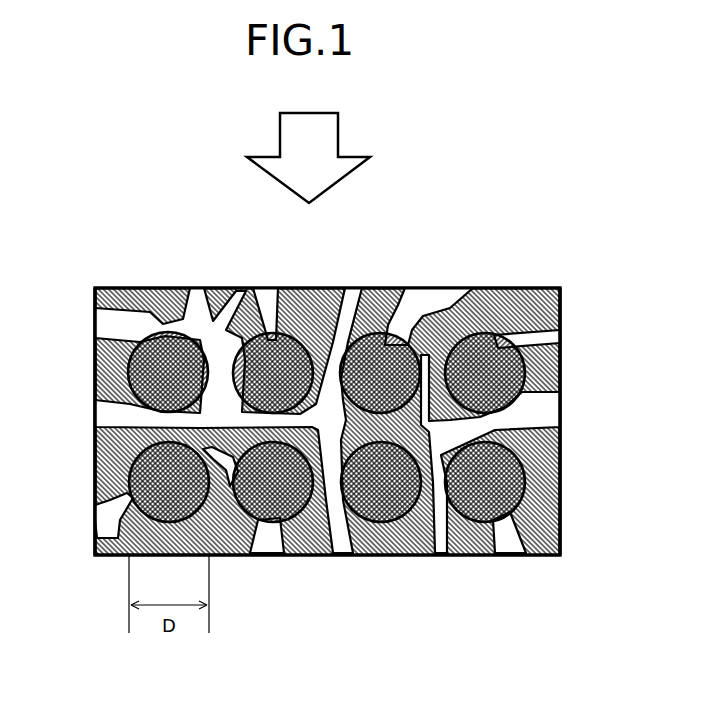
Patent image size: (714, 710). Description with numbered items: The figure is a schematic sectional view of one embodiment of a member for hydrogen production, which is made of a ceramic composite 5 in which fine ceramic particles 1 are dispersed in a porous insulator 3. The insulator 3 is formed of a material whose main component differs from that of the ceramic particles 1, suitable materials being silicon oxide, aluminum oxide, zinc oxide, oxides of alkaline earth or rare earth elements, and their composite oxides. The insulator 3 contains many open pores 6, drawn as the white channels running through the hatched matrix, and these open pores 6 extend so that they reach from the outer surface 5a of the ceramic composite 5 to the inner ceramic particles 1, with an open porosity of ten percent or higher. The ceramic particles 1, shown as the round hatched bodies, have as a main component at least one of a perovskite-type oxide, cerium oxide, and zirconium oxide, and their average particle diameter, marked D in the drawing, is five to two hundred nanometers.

The ceramic particles 1 is at (384, 330).
The porous insulator 3 is at (172, 308).
The ceramic composite 5 is at (500, 288).
The outer surface of the ceramic composite 5a is at (95, 372).
The open pores 6 is at (268, 302).